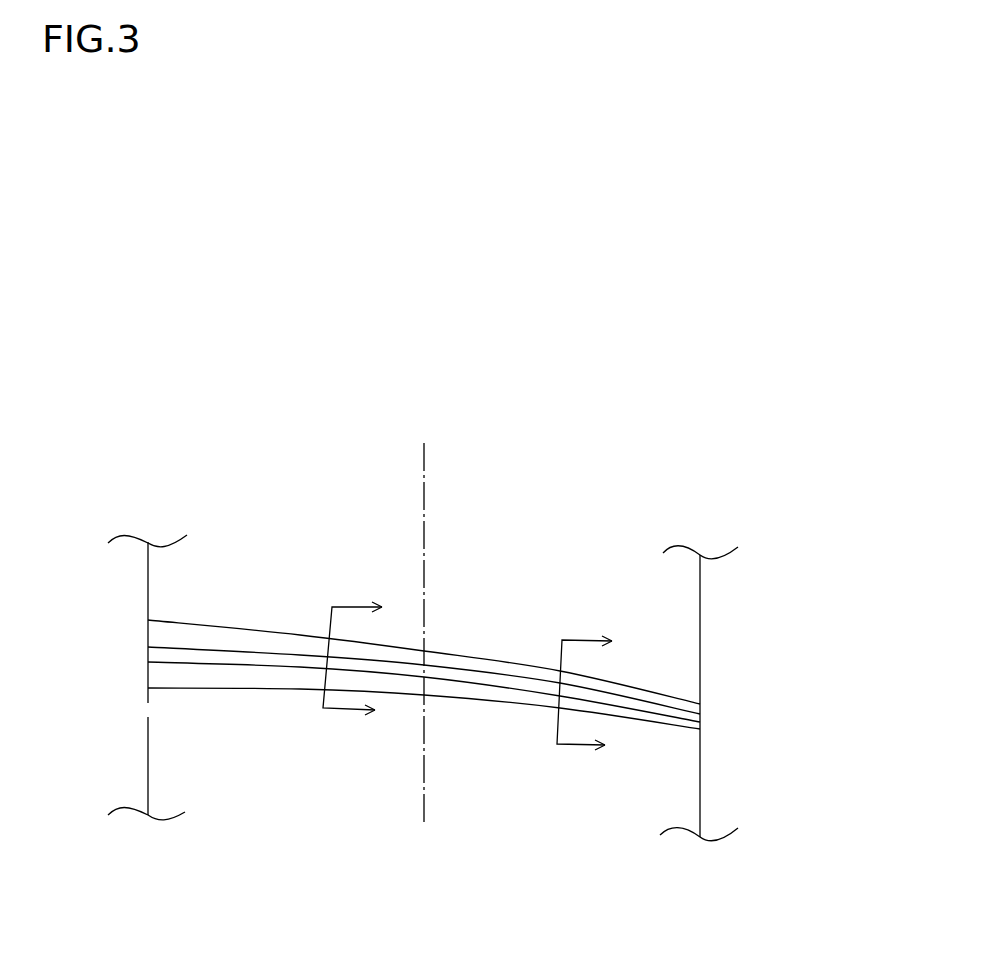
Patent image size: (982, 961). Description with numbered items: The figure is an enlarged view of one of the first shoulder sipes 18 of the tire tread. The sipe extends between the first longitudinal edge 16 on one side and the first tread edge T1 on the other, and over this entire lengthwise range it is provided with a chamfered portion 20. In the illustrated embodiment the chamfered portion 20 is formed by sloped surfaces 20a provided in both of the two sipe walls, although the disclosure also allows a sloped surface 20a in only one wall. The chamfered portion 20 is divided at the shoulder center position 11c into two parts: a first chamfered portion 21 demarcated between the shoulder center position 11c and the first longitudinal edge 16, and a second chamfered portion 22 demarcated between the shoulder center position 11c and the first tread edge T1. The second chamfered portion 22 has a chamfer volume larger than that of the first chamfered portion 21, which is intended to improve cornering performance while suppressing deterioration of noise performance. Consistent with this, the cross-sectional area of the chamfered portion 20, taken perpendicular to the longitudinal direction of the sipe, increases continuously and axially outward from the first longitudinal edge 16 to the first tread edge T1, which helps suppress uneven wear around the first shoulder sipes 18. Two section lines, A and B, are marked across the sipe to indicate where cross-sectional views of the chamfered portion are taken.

The shoulder center position 11c is at (430, 613).
The first longitudinal edge 16 is at (700, 617).
The first shoulder sipe 18 is at (456, 673).
The chamfered portion 20 is at (424, 700).
The sloped surface 20a is at (188, 672).
The first chamfered portion 21 is at (508, 700).
The second chamfered portion 22 is at (250, 673).
The first tread edge T1 is at (148, 604).
The A-A line A is at (367, 658).
The B-B line B is at (600, 693).